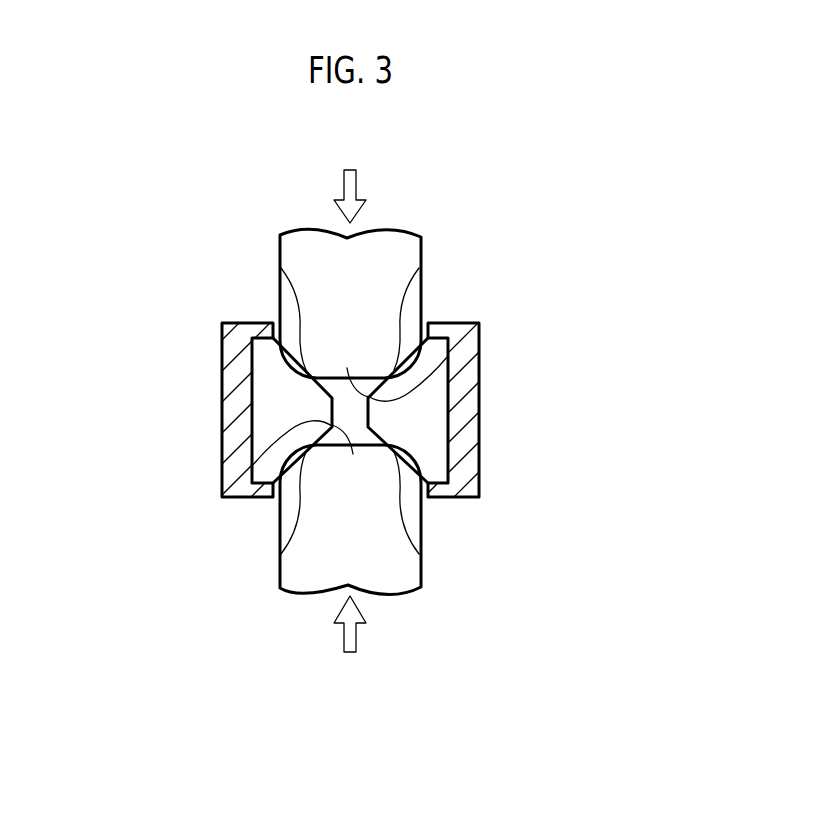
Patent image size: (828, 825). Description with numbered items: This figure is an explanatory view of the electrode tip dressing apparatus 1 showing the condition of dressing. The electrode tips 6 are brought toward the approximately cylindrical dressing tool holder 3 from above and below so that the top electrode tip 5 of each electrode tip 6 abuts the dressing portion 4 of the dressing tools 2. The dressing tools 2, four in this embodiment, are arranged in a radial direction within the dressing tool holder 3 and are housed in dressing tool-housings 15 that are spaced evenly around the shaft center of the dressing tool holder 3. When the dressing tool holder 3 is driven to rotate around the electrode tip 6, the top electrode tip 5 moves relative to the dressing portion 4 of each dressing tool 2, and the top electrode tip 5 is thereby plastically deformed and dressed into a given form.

The electrode tip dressing apparatus 1 is at (515, 245).
The dressing tool 2 is at (267, 416).
The dressing tool holder 3 is at (498, 363).
The dressing portion 4 is at (281, 268).
The top electrode tip 5 is at (222, 497).
The electrode tip 6 is at (410, 210).
The dressing tool-housing 15 is at (255, 393).